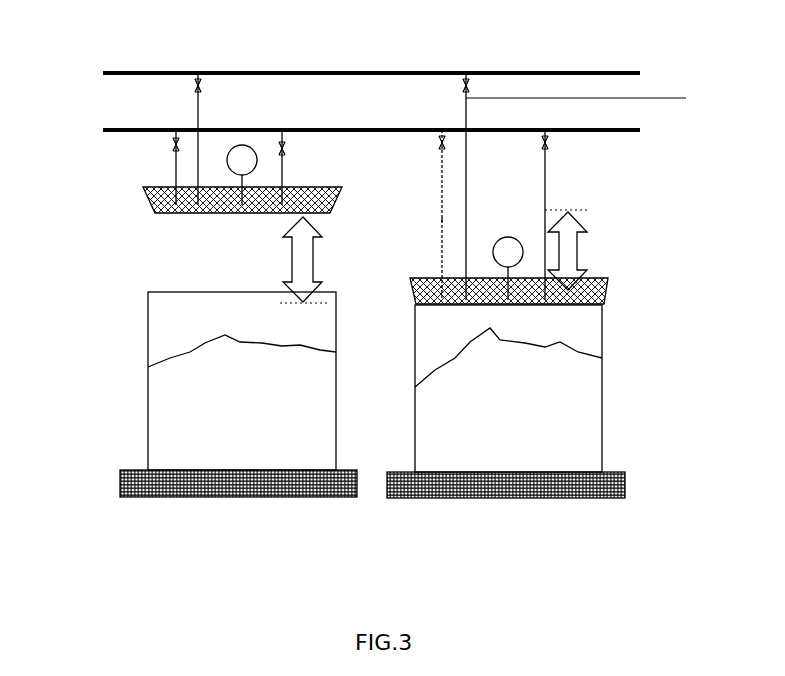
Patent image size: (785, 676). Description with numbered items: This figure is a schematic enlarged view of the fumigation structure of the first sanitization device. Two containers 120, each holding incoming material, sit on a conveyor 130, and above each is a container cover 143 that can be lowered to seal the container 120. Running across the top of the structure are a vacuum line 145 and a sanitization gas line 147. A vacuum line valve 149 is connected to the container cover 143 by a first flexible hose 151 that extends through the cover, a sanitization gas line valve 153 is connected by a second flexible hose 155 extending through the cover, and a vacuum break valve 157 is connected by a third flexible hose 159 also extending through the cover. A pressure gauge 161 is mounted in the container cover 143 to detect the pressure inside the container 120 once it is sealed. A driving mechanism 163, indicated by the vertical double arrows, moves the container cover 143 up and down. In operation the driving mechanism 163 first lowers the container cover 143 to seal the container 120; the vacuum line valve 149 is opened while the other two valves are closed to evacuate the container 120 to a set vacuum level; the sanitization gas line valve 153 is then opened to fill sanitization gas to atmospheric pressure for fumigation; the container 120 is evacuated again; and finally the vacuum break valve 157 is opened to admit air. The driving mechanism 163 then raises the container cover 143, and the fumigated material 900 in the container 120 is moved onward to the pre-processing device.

The container 120 is at (602, 327).
The conveyor 130 is at (155, 483).
The container cover 143 is at (146, 200).
The vacuum line 145 is at (640, 73).
The sanitization gas line 147 is at (103, 131).
The vacuum line valve 149 is at (598, 98).
The first flexible hose 151 is at (466, 193).
The sanitization gas line valve 153 is at (174, 162).
The second flexible hose 155 is at (442, 220).
The vacuum break valve 157 is at (545, 153).
The third flexible hose 159 is at (588, 210).
The pressure gauge 161 is at (243, 145).
The driving mechanism 163 is at (572, 260).
The fumigated material 900 is at (575, 415).